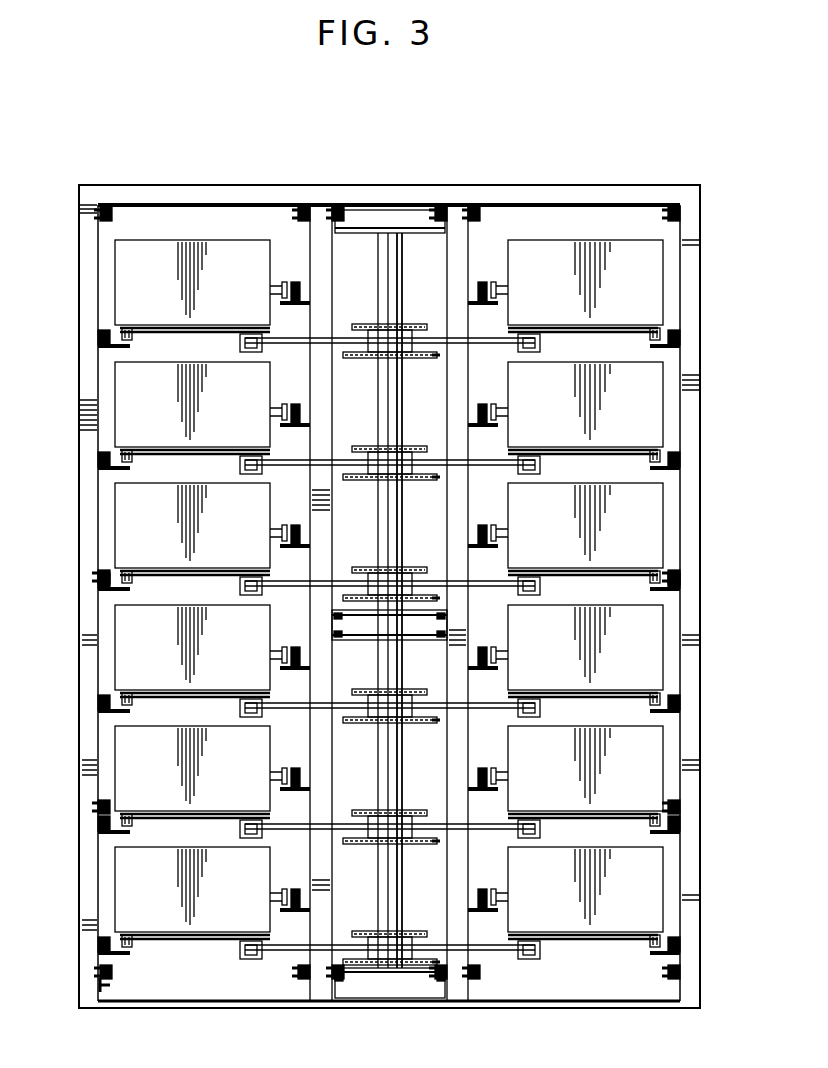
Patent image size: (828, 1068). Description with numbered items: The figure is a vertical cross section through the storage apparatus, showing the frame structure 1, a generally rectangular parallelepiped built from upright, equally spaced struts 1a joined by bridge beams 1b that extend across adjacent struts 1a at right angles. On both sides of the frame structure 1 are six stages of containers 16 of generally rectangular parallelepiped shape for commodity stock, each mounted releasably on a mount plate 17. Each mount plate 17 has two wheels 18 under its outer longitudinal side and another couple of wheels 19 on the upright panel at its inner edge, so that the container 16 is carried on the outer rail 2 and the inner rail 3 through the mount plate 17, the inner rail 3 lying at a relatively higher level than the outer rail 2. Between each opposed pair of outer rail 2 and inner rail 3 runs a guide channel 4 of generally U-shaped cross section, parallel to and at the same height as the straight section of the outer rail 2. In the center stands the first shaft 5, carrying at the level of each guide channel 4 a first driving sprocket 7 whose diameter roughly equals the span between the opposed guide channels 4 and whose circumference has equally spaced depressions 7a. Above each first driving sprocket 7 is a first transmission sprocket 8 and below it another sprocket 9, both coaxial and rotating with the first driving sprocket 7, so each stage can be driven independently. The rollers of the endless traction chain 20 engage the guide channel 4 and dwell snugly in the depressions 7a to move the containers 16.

The frame structure 1 is at (556, 187).
The struts 1a is at (322, 205).
The bridge beams 1b is at (236, 190).
The outer rails 2 is at (125, 468).
The inner rails 3 is at (332, 448).
The guide channel 4 is at (540, 340).
The first shaft 5 is at (403, 270).
The first driving sprockets 7 is at (440, 335).
The depressions 7a is at (435, 360).
The first transmission sprocket 8 is at (360, 324).
The sprocket 9 is at (365, 360).
The container 16 is at (115, 272).
The mount plate 17 is at (180, 332).
The wheels 18 is at (655, 325).
The wheels 19 is at (492, 282).
The endless traction chain 20 is at (240, 338).